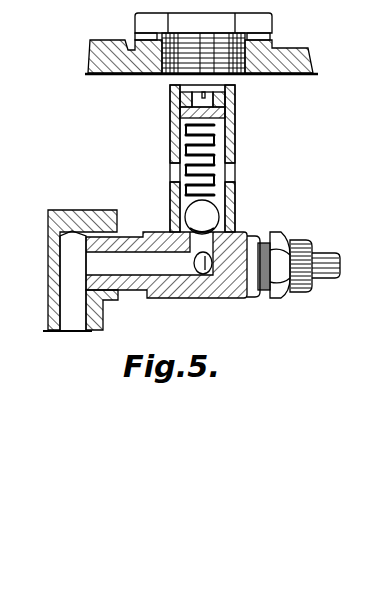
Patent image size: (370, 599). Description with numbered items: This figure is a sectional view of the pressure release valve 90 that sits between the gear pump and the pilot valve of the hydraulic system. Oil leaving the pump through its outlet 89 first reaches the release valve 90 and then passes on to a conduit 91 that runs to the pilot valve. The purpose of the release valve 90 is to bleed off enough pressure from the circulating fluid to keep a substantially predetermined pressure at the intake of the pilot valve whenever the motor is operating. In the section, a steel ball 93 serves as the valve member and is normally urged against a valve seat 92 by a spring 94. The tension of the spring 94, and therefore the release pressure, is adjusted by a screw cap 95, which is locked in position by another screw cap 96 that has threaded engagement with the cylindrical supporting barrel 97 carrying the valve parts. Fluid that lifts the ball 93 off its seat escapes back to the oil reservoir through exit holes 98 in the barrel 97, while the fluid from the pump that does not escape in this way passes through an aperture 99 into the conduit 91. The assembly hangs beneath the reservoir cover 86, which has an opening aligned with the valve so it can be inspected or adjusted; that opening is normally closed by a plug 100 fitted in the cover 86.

The reservoir cover 86 is at (292, 52).
The plug 100 is at (258, 20).
The outlet 89 is at (102, 218).
The pressure release valve 90 is at (238, 207).
The conduit 91 is at (327, 256).
The valve seat 92 is at (248, 233).
The steel ball 93 is at (209, 207).
The spring 94 is at (197, 165).
The screw cap 95 is at (224, 118).
The screw cap 96 is at (212, 96).
The cylindrical supporting barrel 97 is at (180, 137).
The exit holes 98 is at (177, 172).
The aperture 99 is at (203, 274).